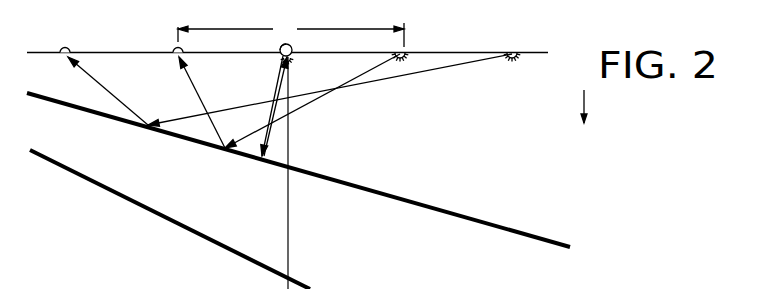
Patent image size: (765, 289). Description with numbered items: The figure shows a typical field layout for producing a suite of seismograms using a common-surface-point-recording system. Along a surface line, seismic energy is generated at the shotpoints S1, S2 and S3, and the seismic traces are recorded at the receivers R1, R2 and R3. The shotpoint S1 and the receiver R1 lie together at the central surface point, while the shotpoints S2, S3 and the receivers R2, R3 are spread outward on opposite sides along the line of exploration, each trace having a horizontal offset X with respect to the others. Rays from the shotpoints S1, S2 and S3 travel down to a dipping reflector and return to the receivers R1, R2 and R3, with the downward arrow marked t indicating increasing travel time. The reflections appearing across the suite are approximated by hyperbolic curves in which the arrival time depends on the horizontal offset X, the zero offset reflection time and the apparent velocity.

The receiver R1 is at (280, 48).
The receiver R2 is at (173, 48).
The receiver R3 is at (68, 38).
The shotpoint S1 is at (292, 57).
The shotpoint S2 is at (405, 53).
The shotpoint S3 is at (514, 43).
The horizontal offset X is at (285, 39).
The time axis t is at (592, 108).